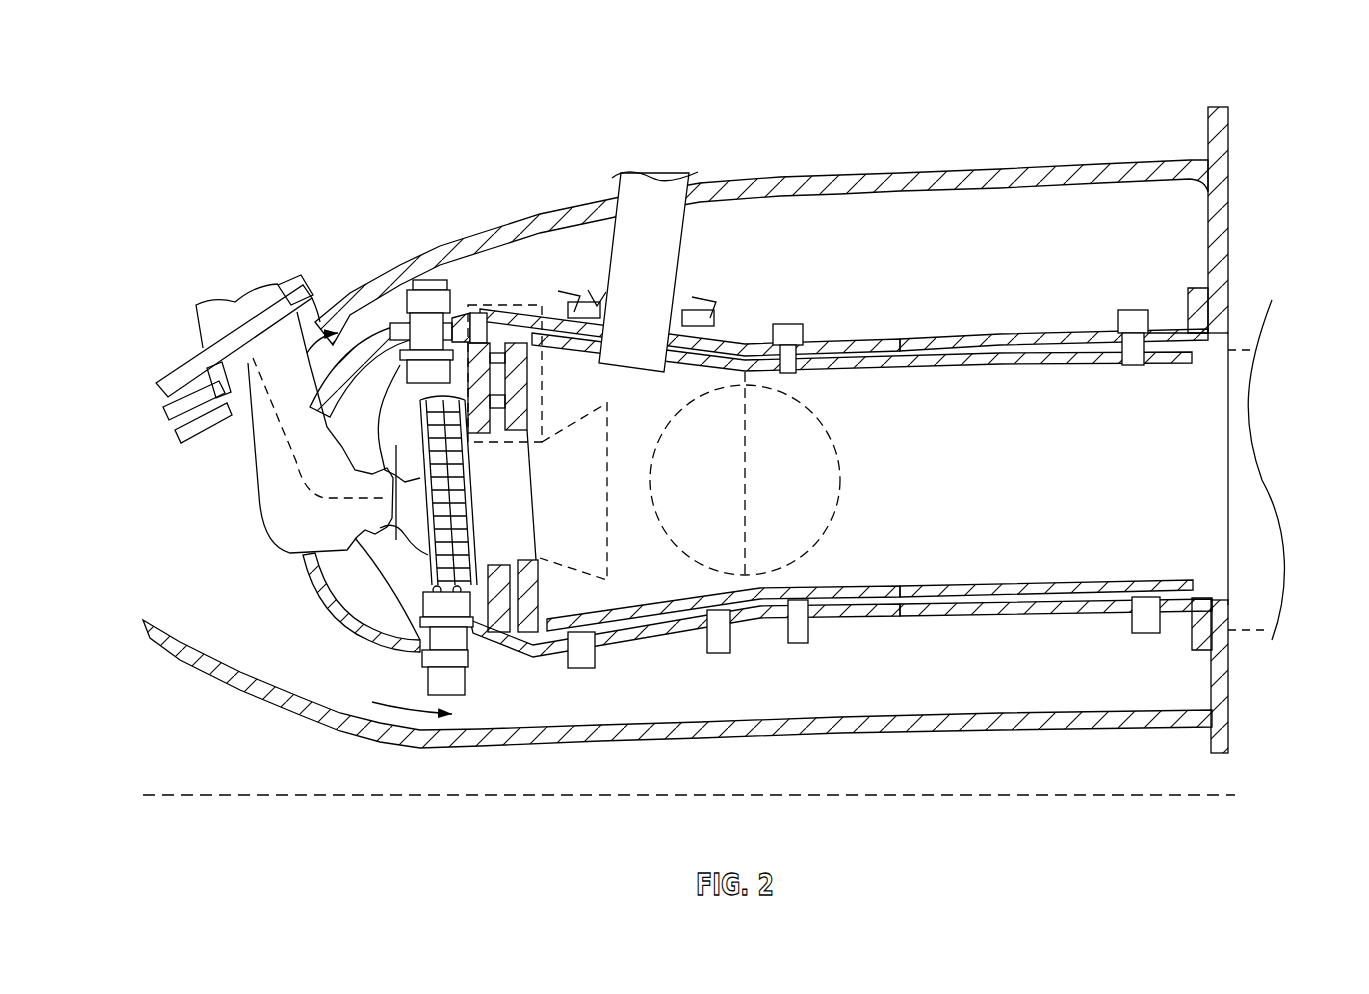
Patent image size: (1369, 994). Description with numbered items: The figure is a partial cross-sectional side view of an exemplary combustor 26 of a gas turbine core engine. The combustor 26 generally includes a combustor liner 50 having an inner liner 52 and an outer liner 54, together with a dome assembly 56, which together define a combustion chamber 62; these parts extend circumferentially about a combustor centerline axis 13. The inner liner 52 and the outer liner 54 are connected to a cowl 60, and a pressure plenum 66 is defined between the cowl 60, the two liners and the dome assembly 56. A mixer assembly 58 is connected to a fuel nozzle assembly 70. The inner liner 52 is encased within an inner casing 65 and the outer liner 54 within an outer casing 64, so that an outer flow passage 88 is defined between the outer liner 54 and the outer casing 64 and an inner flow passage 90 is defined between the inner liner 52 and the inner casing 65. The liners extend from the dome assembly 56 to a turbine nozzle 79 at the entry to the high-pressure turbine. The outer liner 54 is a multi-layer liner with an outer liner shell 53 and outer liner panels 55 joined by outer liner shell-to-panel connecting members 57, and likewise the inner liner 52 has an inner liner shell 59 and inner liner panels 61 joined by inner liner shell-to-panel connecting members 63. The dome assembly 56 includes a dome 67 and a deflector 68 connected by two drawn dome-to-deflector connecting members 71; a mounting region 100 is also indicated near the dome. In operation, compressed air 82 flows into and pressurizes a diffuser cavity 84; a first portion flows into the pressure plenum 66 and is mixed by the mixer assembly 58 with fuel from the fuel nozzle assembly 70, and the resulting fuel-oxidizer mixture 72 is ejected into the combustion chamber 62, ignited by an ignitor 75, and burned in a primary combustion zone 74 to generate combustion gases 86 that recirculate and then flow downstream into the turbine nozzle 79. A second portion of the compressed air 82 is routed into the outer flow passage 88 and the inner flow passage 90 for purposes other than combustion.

The combustor 26 is at (1270, 84).
The outer casing 64 is at (803, 176).
The inner casing 65 is at (706, 745).
The combustor centerline axis 13 is at (942, 795).
The combustor liner 50 is at (844, 304).
The outer liner shell 53 is at (873, 336).
The outer liner 54 is at (1003, 331).
The outer liner panels 55 is at (1001, 372).
The outer liner shell-to-panel connecting members 57 is at (791, 321).
The mounting bracket assembly 100 is at (527, 305).
The ignitor 75 is at (651, 196).
The fuel-oxidizer mixture 72 is at (607, 412).
The combustion gases 86 is at (840, 441).
The primary combustion zone 74 is at (718, 485).
The combustion chamber 62 is at (993, 495).
The outer flow passage 88 is at (1020, 232).
The inner flow passage 90 is at (1000, 679).
The turbine nozzle 79 is at (1252, 452).
The inner liner panels 61 is at (648, 602).
The inner liner shell 59 is at (918, 620).
The inner liner 52 is at (1043, 621).
The inner liner shell-to-panel connecting members 63 is at (577, 670).
The diffuser cavity 84 is at (294, 441).
The fuel nozzle assembly 70 is at (263, 532).
The compressed air 82 is at (206, 592).
The cowl 60 is at (367, 329).
The dome 67 is at (428, 290).
The deflector 68 is at (499, 350).
The dome-to-deflector connecting members 71 is at (517, 362).
The dome assembly 56 is at (546, 584).
The pressure plenum 66 is at (413, 431).
The mixer assembly 58 is at (413, 576).